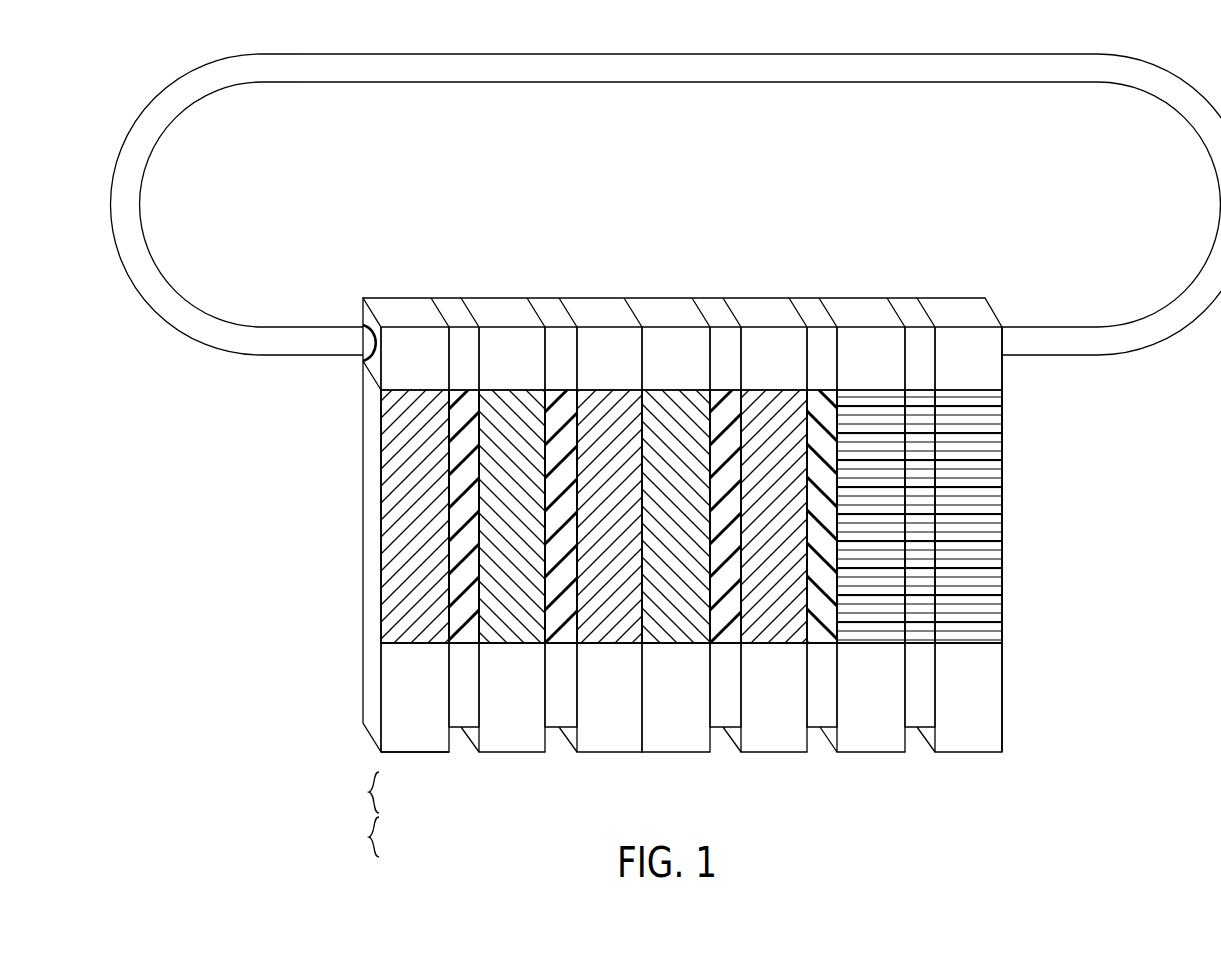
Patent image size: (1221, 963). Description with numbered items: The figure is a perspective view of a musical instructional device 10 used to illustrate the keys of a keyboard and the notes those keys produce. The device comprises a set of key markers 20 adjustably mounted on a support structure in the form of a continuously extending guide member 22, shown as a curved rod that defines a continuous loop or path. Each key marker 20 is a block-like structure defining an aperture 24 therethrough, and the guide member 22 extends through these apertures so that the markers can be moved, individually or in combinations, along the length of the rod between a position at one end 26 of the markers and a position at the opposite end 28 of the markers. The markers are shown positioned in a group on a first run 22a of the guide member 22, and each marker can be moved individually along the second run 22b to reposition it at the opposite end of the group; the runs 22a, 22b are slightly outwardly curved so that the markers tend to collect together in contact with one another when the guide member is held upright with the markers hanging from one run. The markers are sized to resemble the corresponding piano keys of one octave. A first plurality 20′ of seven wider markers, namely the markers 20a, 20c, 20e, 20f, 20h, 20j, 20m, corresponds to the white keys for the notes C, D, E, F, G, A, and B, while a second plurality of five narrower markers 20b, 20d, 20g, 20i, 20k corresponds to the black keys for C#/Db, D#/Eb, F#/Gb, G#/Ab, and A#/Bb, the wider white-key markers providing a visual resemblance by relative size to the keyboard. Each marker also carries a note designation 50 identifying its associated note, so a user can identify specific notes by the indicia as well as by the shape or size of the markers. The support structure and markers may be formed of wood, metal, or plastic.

The musical instructional device 10 is at (116, 85).
The key markers 20 is at (1048, 224).
The guide member 22 is at (150, 252).
The first run 22a is at (1048, 327).
The second run 22b is at (713, 54).
The aperture 24 is at (363, 365).
The one end of the markers 26 is at (334, 504).
The opposite end of the markers 28 is at (1036, 508).
The note designations 50 is at (383, 691).
The key marker for the C note 20a is at (408, 753).
The key marker for the C#/Db note 20b is at (458, 728).
The key marker for the D note 20c is at (513, 753).
The key marker for the D#/Eb note 20d is at (556, 728).
The key marker for the E note 20e is at (619, 753).
The key marker for the F note 20f is at (673, 753).
The key marker for the F#/Gb note 20g is at (719, 728).
The key marker for the G note 20h is at (772, 753).
The key marker for the G#/Ab note 20i is at (816, 728).
The key marker for the A note 20j is at (872, 753).
The key marker for the A#/Bb note 20k is at (913, 728).
The key marker for the B note 20m is at (970, 753).
The first plurality of key markers 20′ is at (358, 792).